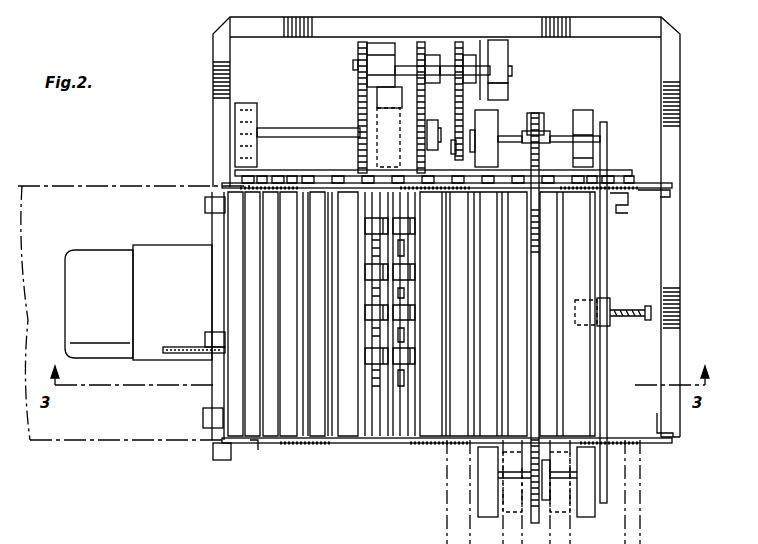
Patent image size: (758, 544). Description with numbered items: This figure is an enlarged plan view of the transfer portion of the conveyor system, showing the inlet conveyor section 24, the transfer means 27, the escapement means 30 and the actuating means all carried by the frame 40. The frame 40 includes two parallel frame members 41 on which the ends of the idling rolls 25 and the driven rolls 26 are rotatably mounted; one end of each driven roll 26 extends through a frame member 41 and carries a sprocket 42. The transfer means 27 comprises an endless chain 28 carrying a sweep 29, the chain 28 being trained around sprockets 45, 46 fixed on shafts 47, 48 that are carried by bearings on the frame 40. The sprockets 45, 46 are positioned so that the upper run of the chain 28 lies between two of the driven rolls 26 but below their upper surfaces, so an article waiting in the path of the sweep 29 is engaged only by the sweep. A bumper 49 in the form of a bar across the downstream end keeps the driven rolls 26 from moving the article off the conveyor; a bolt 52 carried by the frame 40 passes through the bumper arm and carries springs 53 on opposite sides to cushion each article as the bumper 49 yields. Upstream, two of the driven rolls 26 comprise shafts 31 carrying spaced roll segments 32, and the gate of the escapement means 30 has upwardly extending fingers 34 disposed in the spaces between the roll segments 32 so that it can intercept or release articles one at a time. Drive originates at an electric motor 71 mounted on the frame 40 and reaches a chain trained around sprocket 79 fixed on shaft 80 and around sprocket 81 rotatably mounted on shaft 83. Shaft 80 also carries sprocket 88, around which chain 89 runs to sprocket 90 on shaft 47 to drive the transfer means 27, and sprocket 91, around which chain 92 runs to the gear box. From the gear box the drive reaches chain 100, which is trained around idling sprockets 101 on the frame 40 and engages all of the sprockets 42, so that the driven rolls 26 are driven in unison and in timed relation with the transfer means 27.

The inlet conveyor section 24 is at (318, 445).
The idling rolls 25 is at (232, 310).
The driven rolls 26 is at (580, 370).
The transfer means 27 is at (542, 110).
The endless chain 28 is at (537, 113).
The sweep 29 is at (518, 136).
The escapement means 30 is at (393, 445).
The shafts 31 is at (365, 293).
The roll segments 32 is at (365, 226).
The fingers 34 is at (400, 245).
The frame 40 is at (678, 128).
The frame members 41 is at (277, 183).
The sprockets 42 is at (300, 182).
The sprocket 45 is at (550, 134).
The sprocket 46 is at (543, 500).
The shaft 47 is at (568, 138).
The shaft 48 is at (525, 490).
The bumper 49 is at (607, 243).
The bolt 52 is at (648, 316).
The springs 53 is at (635, 308).
The electric motor 71 is at (168, 253).
The sprocket 79 is at (432, 55).
The shaft 80 is at (490, 55).
The sprocket 81 is at (440, 118).
The shaft 83 is at (292, 130).
The sprocket 88 is at (468, 57).
The chain 89 is at (466, 88).
The sprocket 90 is at (478, 126).
The sprocket 91 is at (372, 52).
The chain 92 is at (358, 100).
The chain 100 is at (630, 173).
The idling sprockets 101 is at (252, 184).